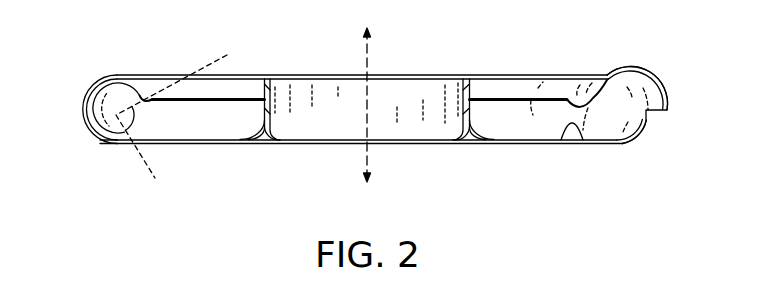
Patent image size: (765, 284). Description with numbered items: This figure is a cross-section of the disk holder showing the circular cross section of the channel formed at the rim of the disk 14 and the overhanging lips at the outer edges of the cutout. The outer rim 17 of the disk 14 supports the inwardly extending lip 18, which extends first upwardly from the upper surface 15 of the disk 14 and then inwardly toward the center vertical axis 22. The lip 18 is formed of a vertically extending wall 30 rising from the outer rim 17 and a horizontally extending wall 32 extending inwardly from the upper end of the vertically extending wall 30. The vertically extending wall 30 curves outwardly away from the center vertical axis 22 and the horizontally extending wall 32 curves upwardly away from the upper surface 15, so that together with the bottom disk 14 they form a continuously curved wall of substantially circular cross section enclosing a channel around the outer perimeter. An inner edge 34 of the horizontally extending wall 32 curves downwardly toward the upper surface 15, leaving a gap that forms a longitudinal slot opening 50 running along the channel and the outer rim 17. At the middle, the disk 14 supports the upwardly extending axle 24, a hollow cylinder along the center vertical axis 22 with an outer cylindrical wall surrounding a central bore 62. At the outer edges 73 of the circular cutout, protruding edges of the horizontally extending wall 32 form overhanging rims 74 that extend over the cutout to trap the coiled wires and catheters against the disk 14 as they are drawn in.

The disk 14 is at (512, 140).
The upper surface 15 is at (576, 128).
The outer rim 17 is at (112, 142).
The inwardly extending lip 18 is at (88, 80).
The center vertical axis 22 is at (370, 57).
The axle 24 is at (258, 124).
The vertically extending wall 30 is at (83, 102).
The horizontally extending wall 32 is at (121, 77).
The inner edge 34 is at (156, 97).
The longitudinal slot opening 50 is at (219, 116).
The central bore 62 is at (443, 123).
The outer edges 73 is at (648, 126).
The overhanging rims 74 is at (634, 92).